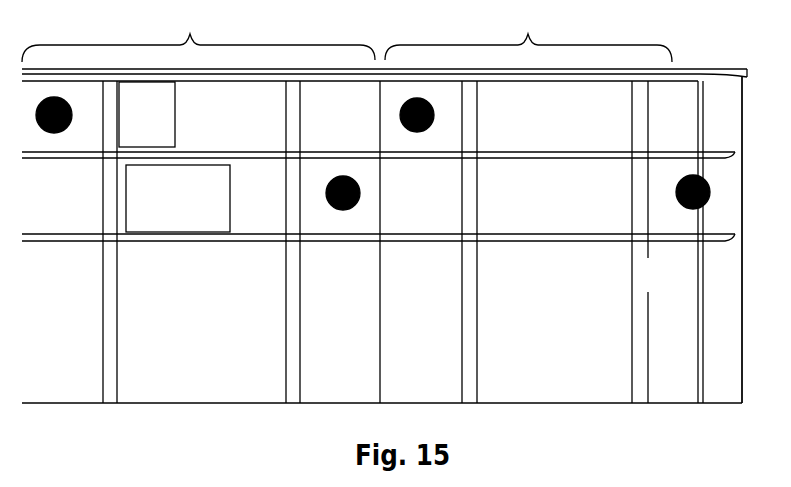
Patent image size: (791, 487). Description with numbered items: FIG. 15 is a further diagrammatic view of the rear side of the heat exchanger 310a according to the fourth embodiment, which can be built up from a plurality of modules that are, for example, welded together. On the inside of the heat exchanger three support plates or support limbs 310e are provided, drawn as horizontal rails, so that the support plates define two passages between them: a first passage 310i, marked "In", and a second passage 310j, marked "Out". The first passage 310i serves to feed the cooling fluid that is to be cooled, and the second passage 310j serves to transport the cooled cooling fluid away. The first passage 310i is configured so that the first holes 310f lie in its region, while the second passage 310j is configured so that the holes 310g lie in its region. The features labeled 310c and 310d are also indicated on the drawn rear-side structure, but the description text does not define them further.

The heat exchanger 310a is at (347, 35).
The end frame 310c is at (719, 97).
The panel 310d is at (414, 242).
The support plates 310e is at (510, 156).
The first holes 310f is at (49, 132).
The holes 310g is at (341, 210).
The first passage 310i is at (194, 114).
The second passage 310j is at (202, 198).